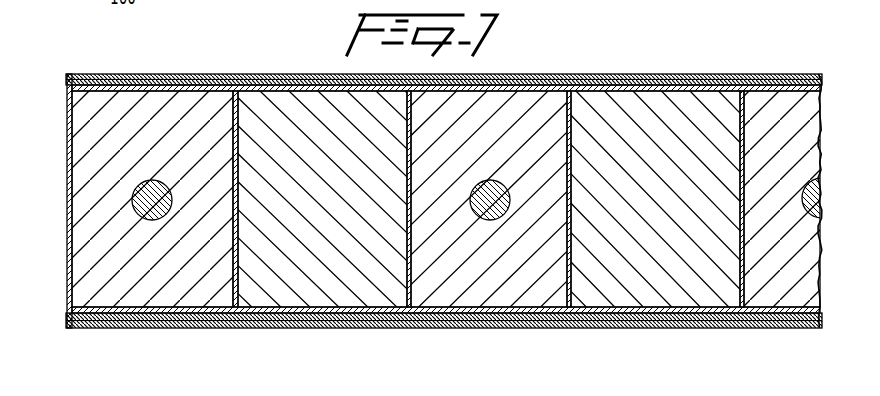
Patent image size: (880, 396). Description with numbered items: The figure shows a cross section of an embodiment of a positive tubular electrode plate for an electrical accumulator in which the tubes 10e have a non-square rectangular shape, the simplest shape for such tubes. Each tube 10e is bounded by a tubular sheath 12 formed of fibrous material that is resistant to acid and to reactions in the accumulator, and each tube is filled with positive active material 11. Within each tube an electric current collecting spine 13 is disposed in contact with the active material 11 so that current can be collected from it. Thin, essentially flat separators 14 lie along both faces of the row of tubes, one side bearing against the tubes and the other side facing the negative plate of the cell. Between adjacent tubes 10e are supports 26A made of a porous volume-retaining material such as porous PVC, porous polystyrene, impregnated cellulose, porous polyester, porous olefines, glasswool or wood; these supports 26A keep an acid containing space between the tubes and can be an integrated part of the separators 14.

The positive active material 11 is at (195, 290).
The tubular sheath 12 is at (66, 128).
The electric current collecting spine 13 is at (146, 219).
The separator 14 is at (214, 74).
The support 26A is at (661, 130).
The tube 10e is at (533, 305).